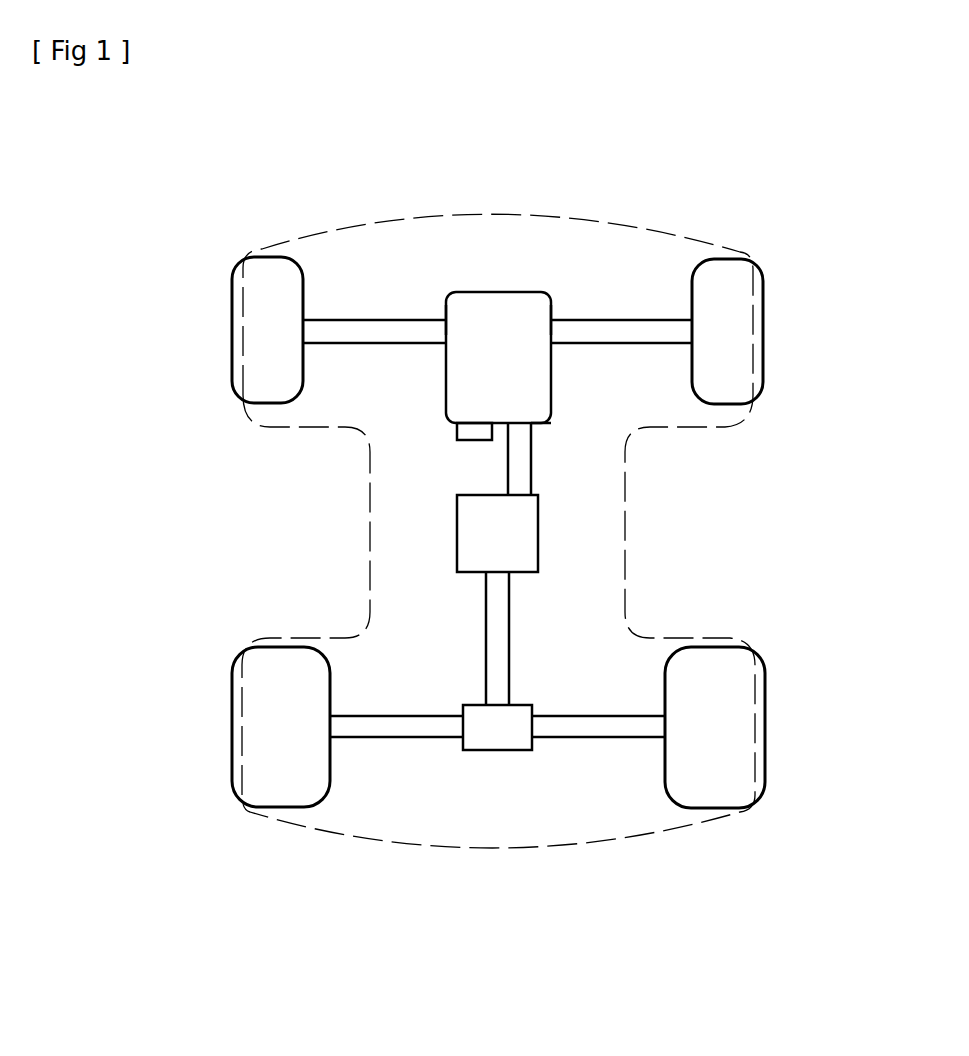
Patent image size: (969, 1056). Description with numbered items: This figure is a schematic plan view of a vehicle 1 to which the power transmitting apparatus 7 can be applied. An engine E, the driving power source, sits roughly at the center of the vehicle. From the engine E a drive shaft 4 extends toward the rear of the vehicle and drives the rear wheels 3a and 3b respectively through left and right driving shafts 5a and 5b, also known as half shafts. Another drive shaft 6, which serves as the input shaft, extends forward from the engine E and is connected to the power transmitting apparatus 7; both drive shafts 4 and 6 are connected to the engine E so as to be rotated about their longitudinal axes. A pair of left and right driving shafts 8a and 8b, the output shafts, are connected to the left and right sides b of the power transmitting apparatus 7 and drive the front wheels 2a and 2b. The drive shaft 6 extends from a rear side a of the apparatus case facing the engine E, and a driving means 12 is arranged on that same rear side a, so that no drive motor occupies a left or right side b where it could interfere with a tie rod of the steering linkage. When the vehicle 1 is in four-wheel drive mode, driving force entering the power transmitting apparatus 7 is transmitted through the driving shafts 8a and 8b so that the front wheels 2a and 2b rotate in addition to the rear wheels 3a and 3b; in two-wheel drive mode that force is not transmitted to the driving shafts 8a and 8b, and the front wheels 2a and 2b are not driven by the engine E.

The vehicle 1 is at (219, 199).
The front wheel 2a is at (232, 311).
The front wheel 2b is at (763, 310).
The rear wheel 3a is at (232, 707).
The rear wheel 3b is at (765, 700).
The drive shaft 4 is at (509, 622).
The driving shaft 5a is at (388, 716).
The driving shaft 5b is at (594, 716).
The drive shaft 6 is at (531, 470).
The power transmitting apparatus 7 is at (498, 357).
The driving shaft 8a is at (365, 320).
The driving shaft 8b is at (612, 320).
The driving means 12 is at (457, 432).
The rear side a is at (536, 423).
The left and right sides b is at (446, 311).
The engine E is at (497, 533).